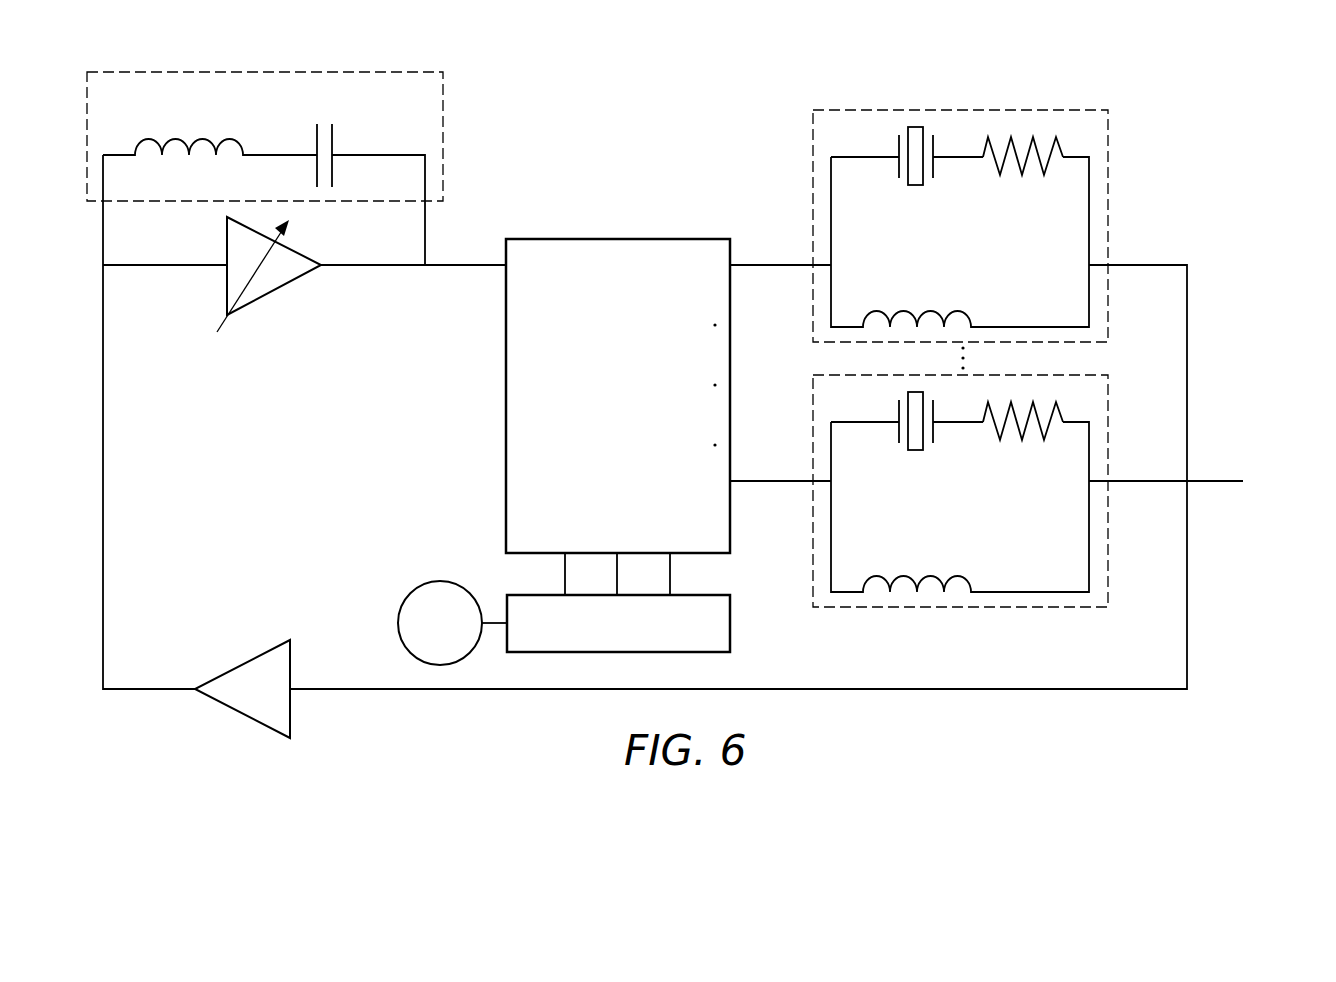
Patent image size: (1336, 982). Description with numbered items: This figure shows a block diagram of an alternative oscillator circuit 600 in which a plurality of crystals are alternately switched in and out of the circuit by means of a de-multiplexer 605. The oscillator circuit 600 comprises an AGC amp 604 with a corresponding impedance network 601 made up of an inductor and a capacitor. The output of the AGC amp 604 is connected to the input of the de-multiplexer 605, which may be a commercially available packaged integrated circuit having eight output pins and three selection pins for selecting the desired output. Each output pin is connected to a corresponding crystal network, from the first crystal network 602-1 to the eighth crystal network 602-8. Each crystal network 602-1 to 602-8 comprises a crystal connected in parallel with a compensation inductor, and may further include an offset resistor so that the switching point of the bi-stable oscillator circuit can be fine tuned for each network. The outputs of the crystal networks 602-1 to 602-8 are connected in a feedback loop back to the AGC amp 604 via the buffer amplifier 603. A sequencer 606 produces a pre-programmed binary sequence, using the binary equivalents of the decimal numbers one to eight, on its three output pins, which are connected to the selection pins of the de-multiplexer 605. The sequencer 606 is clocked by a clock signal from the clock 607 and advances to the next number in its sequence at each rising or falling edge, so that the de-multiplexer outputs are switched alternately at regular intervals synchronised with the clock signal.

The oscillator circuit 600 is at (635, 64).
The impedance network 601 is at (452, 63).
The crystal network 602-1 is at (1040, 102).
The crystal network 602-8 is at (1040, 608).
The buffer amplifier 603 is at (247, 660).
The AGC amp 604 is at (280, 293).
The de-multiplexer 605 is at (668, 239).
The sequencer 606 is at (730, 637).
The clock 607 is at (412, 589).